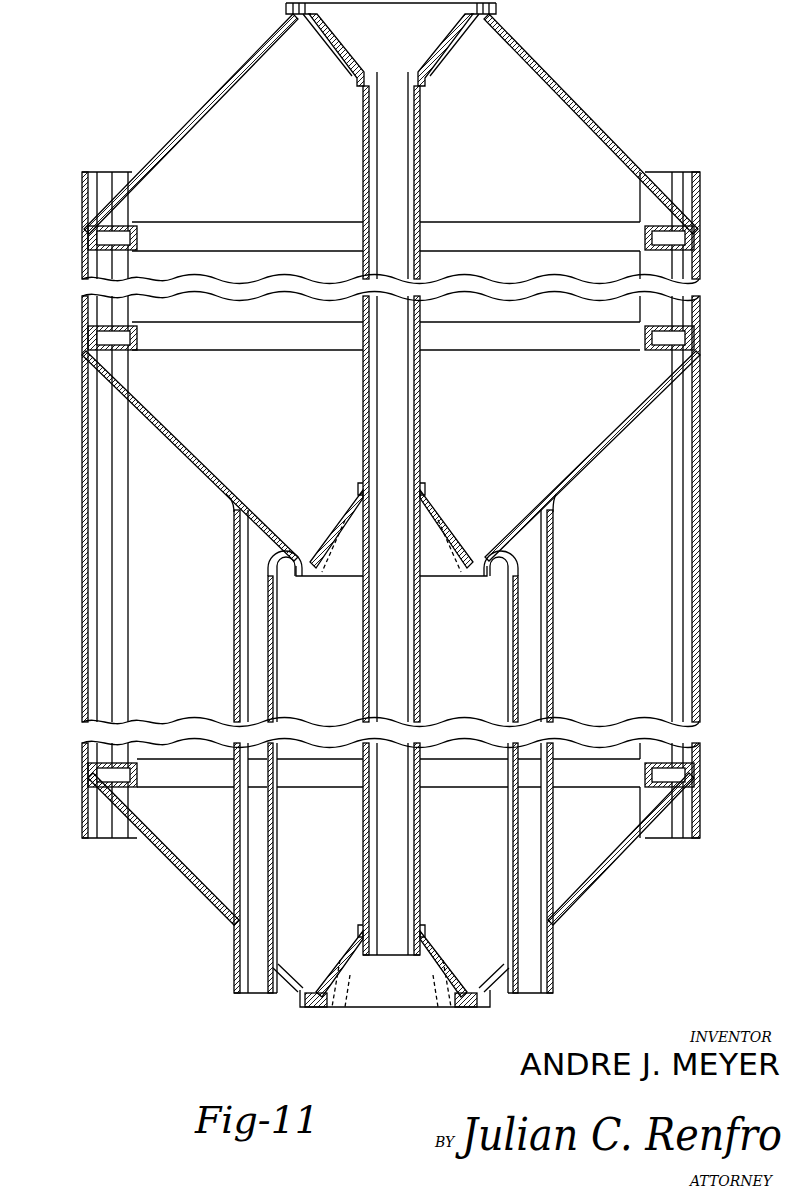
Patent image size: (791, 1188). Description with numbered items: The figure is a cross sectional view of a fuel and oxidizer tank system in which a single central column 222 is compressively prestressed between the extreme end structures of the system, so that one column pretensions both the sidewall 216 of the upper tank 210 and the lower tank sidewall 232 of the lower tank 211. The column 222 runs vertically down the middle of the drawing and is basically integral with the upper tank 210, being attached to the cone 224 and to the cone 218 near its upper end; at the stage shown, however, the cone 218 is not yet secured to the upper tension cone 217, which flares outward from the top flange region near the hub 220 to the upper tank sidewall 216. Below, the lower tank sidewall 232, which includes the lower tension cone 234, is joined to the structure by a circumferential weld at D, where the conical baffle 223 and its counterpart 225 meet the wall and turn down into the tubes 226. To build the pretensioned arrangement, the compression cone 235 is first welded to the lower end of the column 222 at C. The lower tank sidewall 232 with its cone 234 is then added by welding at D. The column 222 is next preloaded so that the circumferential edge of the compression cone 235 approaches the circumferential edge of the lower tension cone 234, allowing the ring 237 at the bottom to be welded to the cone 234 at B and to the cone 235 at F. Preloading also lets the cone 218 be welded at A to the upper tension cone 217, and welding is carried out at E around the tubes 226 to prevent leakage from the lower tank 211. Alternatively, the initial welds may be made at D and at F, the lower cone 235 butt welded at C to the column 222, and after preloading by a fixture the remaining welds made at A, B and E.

The upper tank 210 is at (82, 212).
The lower tank 211 is at (82, 500).
The sidewall of the upper tank 216 is at (700, 252).
The upper tension cone 217 is at (592, 121).
The cone 218 is at (452, 50).
The top flange 220 is at (496, 9).
The column 222 is at (420, 410).
The right conical baffle 223 is at (615, 425).
The cone 224 is at (452, 530).
The left conical baffle 225 is at (260, 532).
The tubes 226 is at (553, 605).
The lower tank sidewall 232 is at (700, 620).
The lower tension cone 234 is at (610, 870).
The compression cone 235 is at (450, 958).
The ring 237 is at (300, 1010).
The weld A is at (292, 21).
The weld B is at (288, 990).
The weld C is at (367, 912).
The weld D is at (82, 352).
The weld E is at (234, 928).
The weld F is at (328, 1000).